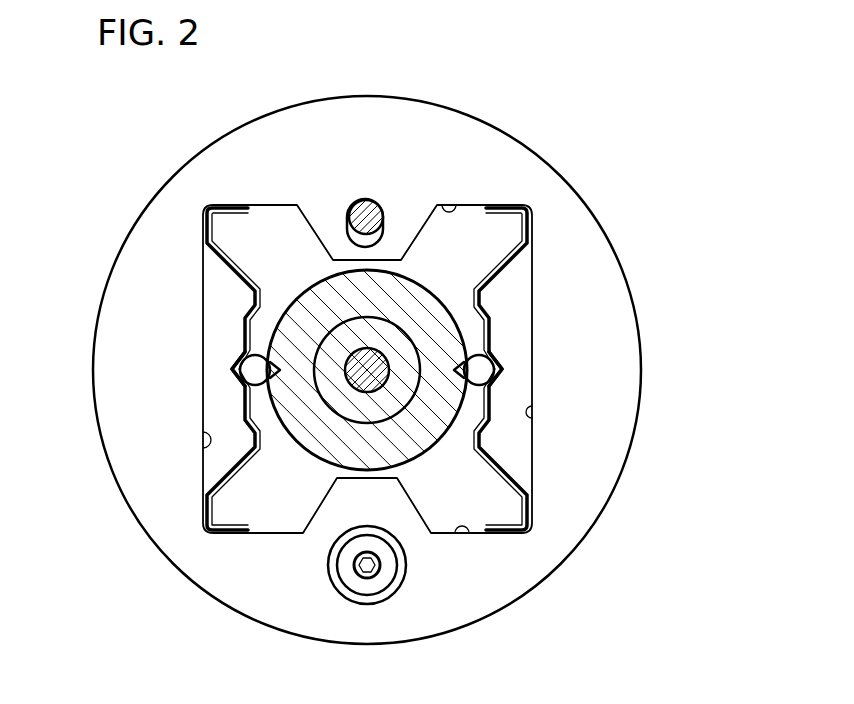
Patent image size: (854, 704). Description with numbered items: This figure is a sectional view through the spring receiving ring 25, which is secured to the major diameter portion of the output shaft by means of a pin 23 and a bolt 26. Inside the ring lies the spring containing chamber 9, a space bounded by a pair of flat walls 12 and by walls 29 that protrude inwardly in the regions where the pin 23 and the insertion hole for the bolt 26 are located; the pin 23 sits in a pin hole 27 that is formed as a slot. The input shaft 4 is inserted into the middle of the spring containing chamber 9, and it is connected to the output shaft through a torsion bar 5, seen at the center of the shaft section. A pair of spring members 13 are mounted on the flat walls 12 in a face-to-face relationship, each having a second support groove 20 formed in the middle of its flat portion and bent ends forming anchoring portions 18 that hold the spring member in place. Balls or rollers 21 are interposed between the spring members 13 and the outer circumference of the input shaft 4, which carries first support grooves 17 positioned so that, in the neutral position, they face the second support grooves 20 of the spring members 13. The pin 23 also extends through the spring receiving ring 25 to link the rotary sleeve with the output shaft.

The input shaft 4 is at (403, 453).
The torsion bar 5 is at (353, 383).
The spring containing chamber 9 is at (440, 527).
The flat wall 12 is at (531, 415).
The spring member 13 is at (510, 462).
The first support groove 17 is at (260, 333).
The anchoring portion 18 is at (223, 210).
The second support groove 20 is at (233, 370).
The ball or roller 21 is at (250, 373).
The pin 23 is at (455, 206).
The spring receiving ring 25 is at (298, 128).
The bolt 26 is at (367, 583).
The pin hole 27 is at (372, 186).
The wall 29 is at (383, 203).